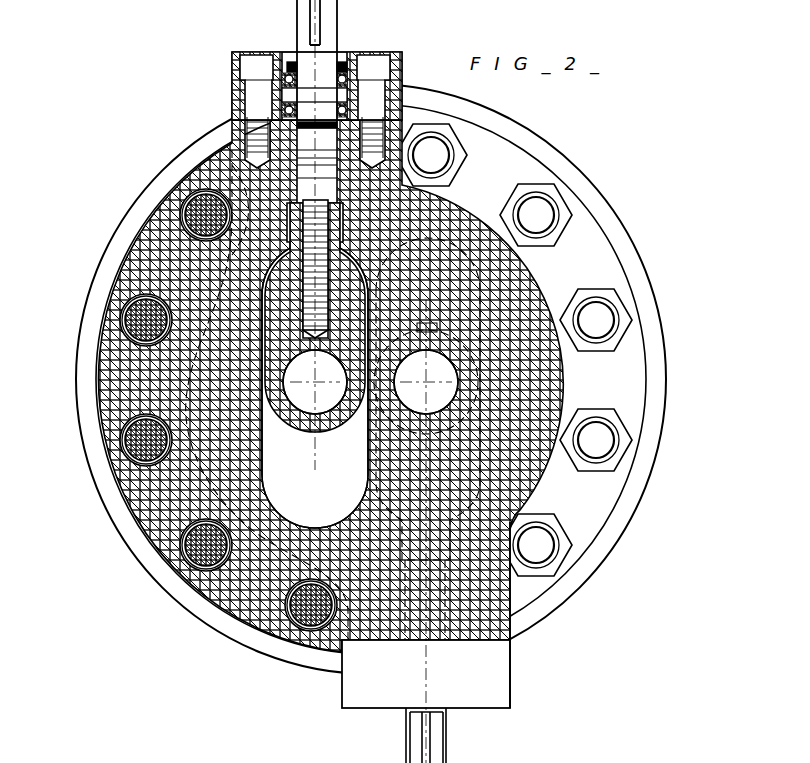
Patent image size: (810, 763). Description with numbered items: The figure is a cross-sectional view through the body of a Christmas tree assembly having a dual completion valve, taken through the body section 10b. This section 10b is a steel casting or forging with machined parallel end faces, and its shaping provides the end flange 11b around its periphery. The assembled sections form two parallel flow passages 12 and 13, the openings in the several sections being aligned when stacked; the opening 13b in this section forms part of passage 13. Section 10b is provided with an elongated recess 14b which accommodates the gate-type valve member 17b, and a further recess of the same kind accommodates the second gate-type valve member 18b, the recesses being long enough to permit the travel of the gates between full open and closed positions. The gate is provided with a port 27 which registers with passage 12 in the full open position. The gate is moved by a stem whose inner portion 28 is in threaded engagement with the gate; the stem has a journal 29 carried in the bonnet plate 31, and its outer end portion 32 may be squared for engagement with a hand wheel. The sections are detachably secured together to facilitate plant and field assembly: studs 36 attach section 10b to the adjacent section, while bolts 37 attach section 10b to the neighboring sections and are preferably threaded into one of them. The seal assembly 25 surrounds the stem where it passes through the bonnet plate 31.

The section 10b is at (555, 390).
The end flange 11b is at (633, 421).
The flow passage 12 is at (306, 404).
The flow passage 13 is at (440, 380).
The opening 13b is at (565, 391).
The recess 14b is at (268, 423).
The valve member 17b is at (270, 354).
The valve member 18b is at (474, 443).
The seal assembly 25 is at (306, 57).
The port 27 is at (336, 422).
The inner portion 28 is at (322, 262).
The journal 29 is at (280, 96).
The bonnet plate 31 is at (236, 108).
The outer end portion 32 is at (297, 15).
The studs 36 is at (548, 212).
The bolts 37 is at (190, 548).